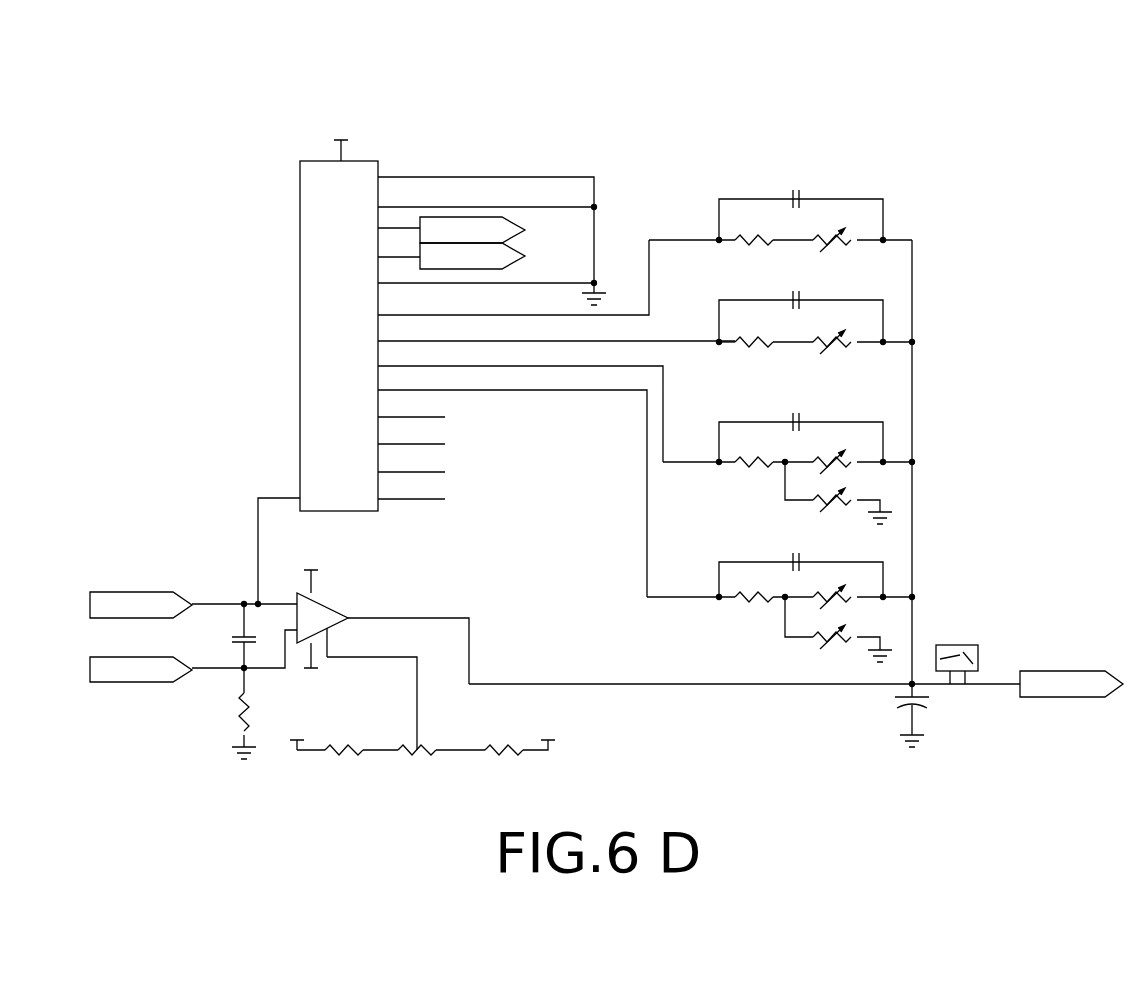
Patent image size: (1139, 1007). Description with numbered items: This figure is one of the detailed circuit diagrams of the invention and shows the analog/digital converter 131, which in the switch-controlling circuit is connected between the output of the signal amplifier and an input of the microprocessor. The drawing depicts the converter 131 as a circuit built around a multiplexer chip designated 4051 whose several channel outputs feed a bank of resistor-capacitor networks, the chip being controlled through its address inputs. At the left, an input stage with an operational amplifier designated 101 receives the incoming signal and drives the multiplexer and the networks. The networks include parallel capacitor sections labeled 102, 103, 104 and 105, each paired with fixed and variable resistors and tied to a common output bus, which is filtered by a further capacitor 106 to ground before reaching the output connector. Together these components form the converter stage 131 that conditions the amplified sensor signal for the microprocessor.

The analog/digital converter 131 is at (957, 178).
The analog multiplexer U102 4051 is at (339, 323).
The operational amplifier U101 101 is at (352, 618).
The capacitor C102 network 102 is at (780, 217).
The capacitor C103 network 103 is at (815, 320).
The capacitor C104 network 104 is at (787, 461).
The capacitor C105 network 105 is at (779, 600).
The capacitor C106 106 is at (939, 715).